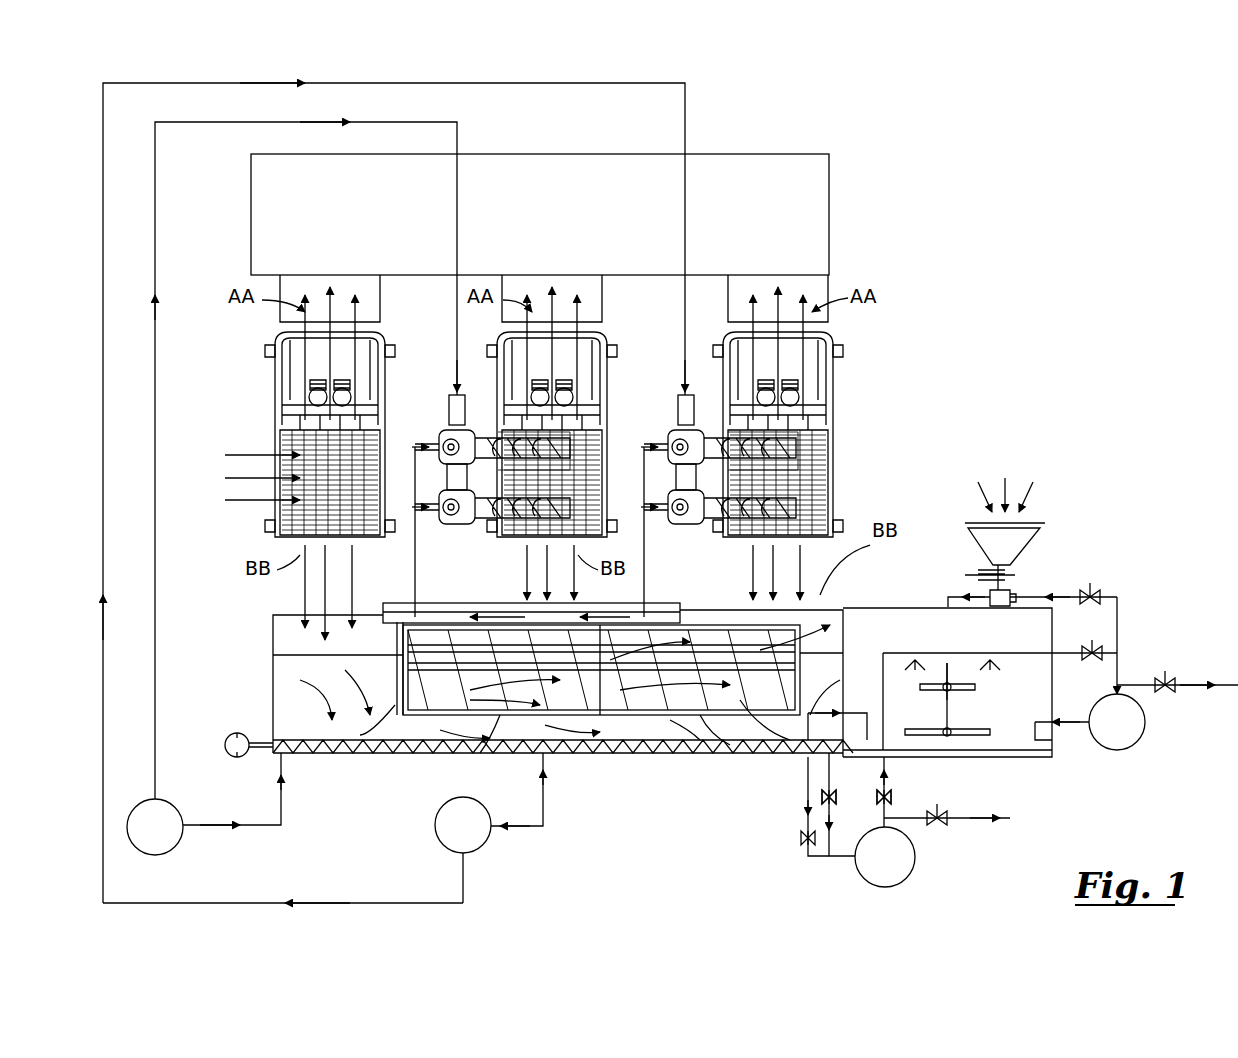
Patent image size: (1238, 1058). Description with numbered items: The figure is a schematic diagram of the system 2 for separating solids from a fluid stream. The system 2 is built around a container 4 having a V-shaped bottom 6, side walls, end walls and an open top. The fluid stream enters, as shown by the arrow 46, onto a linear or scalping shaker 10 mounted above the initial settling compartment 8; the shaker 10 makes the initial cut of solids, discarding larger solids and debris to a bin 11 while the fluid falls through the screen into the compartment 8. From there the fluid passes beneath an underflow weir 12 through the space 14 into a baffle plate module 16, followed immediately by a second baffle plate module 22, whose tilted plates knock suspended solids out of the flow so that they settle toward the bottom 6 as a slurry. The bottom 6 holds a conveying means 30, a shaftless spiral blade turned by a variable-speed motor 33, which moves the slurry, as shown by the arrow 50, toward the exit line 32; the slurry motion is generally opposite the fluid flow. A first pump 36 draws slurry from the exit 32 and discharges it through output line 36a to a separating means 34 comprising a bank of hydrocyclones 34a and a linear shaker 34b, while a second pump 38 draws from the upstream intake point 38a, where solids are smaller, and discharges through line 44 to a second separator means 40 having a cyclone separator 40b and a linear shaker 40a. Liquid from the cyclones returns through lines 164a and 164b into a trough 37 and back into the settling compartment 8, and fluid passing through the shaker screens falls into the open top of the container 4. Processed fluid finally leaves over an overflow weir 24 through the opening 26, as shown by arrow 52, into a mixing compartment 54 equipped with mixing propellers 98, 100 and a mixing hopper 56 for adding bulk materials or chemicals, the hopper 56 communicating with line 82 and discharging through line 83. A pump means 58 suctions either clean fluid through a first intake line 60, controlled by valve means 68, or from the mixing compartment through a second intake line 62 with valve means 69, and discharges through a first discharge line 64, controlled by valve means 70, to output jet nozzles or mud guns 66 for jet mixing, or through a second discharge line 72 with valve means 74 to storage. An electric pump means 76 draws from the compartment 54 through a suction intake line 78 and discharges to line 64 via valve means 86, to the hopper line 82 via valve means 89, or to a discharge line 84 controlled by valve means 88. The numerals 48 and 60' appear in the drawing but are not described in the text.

The system 2 is at (1040, 330).
The container 4 is at (273, 685).
The bottom 6 is at (615, 757).
The initial settling compartment 8 is at (290, 710).
The linear shaker 10 is at (290, 420).
The bin 11 is at (740, 205).
The underflow weir 12 is at (395, 720).
The space 14 is at (430, 730).
The baffle plate module 16 is at (505, 745).
The second baffle plate module 22 is at (593, 757).
The overflow weir 24 is at (835, 635).
The opening 26 is at (870, 640).
The means for conveying 30 is at (710, 757).
The exit line 32 is at (270, 805).
The motor 33 is at (228, 738).
The separating means 34 is at (618, 385).
The hydrocyclones 34a is at (445, 425).
The linear shaker 34b is at (597, 425).
The pump 36 is at (165, 845).
The output line 36a is at (155, 285).
The trough 37 is at (467, 612).
The second electric pump 38 is at (480, 840).
The intake point 38a is at (548, 760).
The second separator means 40 is at (870, 385).
The linear shaker 40a is at (825, 412).
The cyclone separator 40b is at (703, 530).
The discharge line 44 is at (103, 290).
The arrow 46 is at (245, 505).
The flow arrow 48 is at (490, 745).
The arrow 50 is at (690, 757).
The arrow 52 is at (910, 605).
The mixing compartment 54 is at (1020, 757).
The mixing hopper 56 is at (1010, 545).
The pump means 58 is at (890, 870).
The first intake line 60 is at (847, 804).
The line 60' is at (760, 782).
The second intake line 62 is at (805, 785).
The first discharge line 64 is at (1052, 650).
The output jet nozzles 66 is at (912, 658).
The valve means 68 is at (835, 795).
The valve means 69 is at (800, 850).
The valve means 70 is at (892, 800).
The second discharge line 72 is at (915, 820).
The valve means 74 is at (942, 808).
The electric pump means 76 is at (1125, 740).
The suction intake line 78 is at (1072, 730).
The second discharge line 82 is at (1095, 590).
The discharge line 83 is at (950, 595).
The discharge line 84 is at (1135, 685).
The valve means 86 is at (1090, 660).
The valve means 88 is at (1168, 692).
The valve means 89 is at (1117, 595).
The mixing propeller 98 is at (960, 730).
The mixing propeller 100 is at (925, 687).
The line 164a is at (413, 545).
The line 164b is at (645, 545).